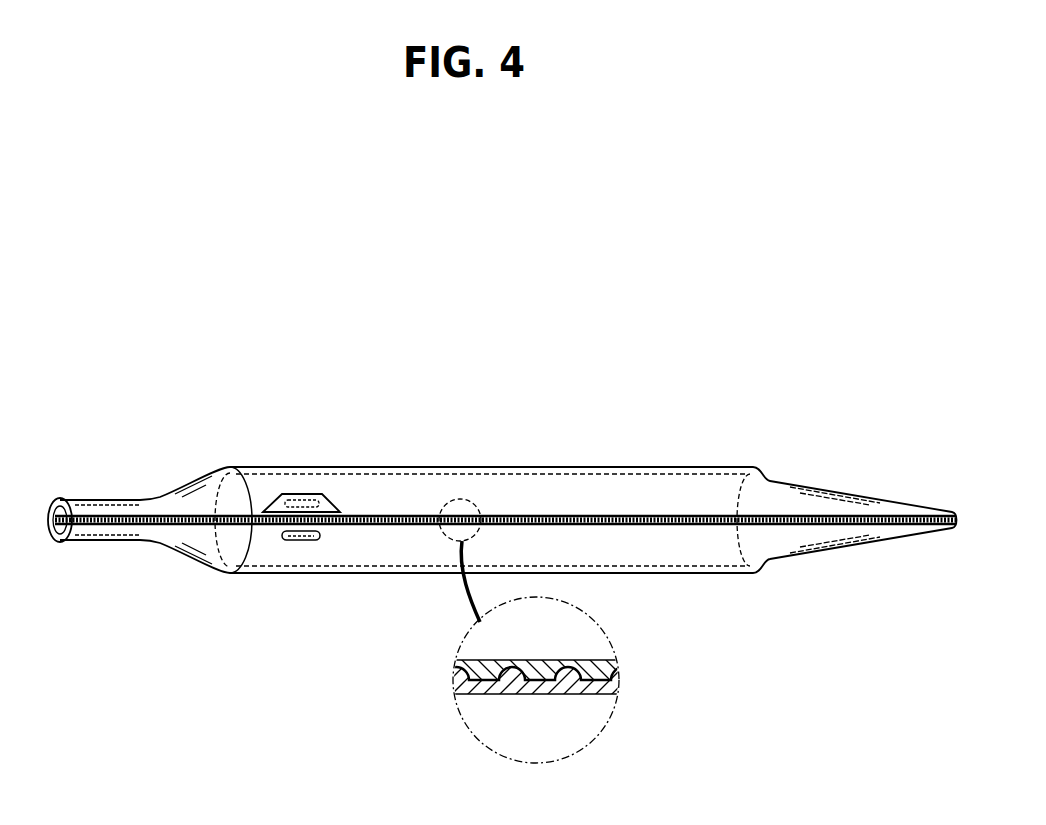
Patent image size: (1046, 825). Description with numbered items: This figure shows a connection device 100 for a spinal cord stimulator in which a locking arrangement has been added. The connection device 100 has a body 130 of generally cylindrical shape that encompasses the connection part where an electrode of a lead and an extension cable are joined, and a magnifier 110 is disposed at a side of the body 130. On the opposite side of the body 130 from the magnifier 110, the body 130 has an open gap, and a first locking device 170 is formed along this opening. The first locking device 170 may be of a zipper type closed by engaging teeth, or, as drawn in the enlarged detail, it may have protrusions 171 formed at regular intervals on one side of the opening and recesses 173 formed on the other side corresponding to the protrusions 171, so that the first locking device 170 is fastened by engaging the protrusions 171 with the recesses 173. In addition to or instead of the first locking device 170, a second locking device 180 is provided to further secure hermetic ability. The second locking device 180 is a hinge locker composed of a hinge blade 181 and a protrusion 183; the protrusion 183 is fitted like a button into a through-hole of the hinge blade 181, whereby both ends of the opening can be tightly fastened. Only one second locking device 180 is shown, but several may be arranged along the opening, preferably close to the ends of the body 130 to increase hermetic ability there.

The connection device 100 is at (94, 371).
The magnifier 110 is at (310, 474).
The body 130 is at (470, 467).
The first locking device 170 is at (575, 517).
The protrusions 171 is at (512, 673).
The recesses 173 is at (541, 665).
The second locking device 180 is at (178, 366).
The hinge blade 181 is at (305, 496).
The protrusion 183 is at (293, 541).